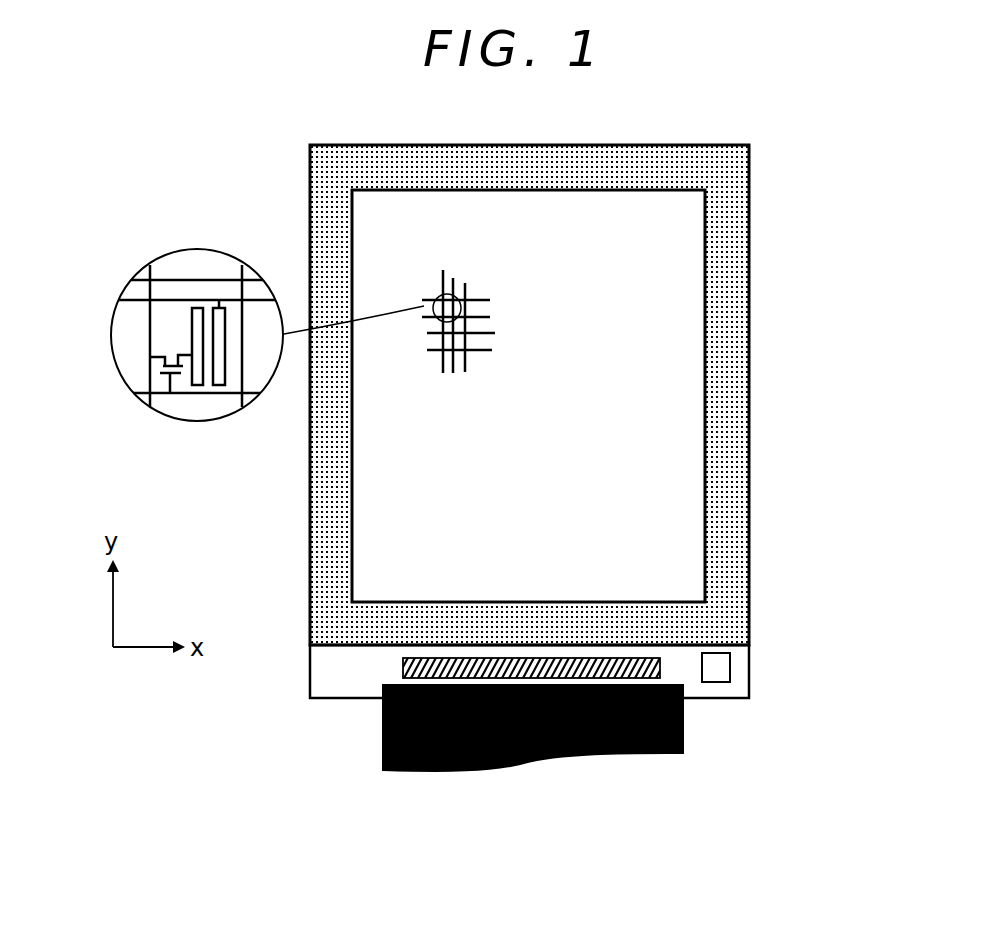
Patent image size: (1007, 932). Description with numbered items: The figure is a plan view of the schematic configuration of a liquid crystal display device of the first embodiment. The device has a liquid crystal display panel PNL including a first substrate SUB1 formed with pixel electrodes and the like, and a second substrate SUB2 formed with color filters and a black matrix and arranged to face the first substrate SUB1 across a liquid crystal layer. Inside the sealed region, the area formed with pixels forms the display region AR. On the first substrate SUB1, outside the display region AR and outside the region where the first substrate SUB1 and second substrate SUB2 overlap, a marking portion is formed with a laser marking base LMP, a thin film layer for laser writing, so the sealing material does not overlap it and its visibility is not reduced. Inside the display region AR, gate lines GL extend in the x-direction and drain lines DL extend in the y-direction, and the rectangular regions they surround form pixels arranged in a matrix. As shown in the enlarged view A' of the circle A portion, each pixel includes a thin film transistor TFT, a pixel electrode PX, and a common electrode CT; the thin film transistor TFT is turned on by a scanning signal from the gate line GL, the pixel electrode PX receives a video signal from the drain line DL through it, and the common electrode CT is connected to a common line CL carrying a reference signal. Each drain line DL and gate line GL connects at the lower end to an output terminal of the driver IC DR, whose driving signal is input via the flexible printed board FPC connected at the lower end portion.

The liquid crystal display panel PNL is at (552, 458).
The second substrate SUB2 is at (749, 172).
The first substrate SUB1 is at (745, 656).
The display region AR is at (695, 415).
The driver IC DR is at (403, 665).
The laser marking base LMP is at (725, 672).
The flexible printed board FPC is at (683, 727).
The drain line DL is at (442, 268).
The gate line GL is at (432, 352).
The common line CL is at (190, 292).
The pixel electrode PX is at (192, 320).
The common electrode CT is at (217, 387).
The thin film transistor TFT is at (158, 372).
The circle A portion A is at (435, 296).
The enlarged view A' is at (264, 327).